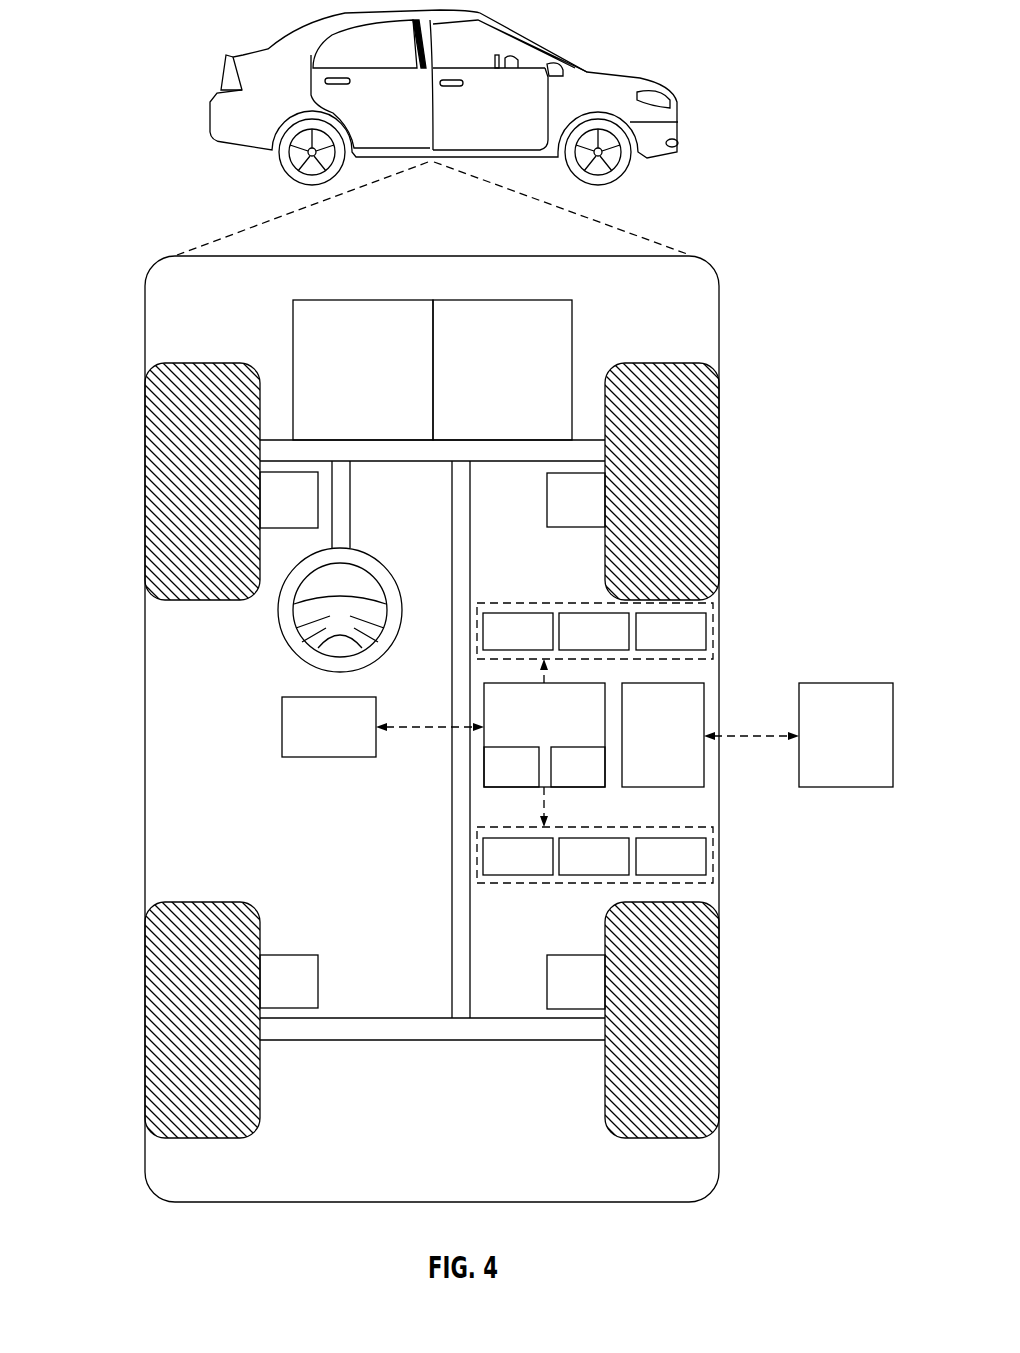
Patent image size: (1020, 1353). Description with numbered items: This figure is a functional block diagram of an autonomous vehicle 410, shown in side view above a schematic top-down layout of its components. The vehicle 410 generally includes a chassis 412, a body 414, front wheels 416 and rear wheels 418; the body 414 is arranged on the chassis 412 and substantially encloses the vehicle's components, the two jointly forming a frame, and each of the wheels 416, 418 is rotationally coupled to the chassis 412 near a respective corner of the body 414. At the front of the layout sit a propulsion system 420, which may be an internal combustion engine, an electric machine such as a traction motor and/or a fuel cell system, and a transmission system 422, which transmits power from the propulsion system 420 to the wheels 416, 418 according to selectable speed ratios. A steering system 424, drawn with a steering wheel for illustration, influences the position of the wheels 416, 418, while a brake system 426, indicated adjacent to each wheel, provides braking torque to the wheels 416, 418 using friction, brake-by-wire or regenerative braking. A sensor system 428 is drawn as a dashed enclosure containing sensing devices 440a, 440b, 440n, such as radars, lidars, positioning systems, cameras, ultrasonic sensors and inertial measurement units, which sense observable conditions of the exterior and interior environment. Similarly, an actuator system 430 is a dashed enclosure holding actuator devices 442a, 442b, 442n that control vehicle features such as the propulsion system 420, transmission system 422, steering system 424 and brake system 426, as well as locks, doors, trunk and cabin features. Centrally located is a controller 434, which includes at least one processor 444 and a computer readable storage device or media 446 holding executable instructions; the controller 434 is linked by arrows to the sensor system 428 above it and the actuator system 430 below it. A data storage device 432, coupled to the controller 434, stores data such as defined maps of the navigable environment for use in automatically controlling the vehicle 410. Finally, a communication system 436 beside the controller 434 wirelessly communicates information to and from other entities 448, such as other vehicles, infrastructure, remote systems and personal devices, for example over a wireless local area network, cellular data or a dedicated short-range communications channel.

The vehicle 410 is at (222, 92).
The chassis 412 is at (452, 895).
The body 414 is at (146, 692).
The front wheels 416 is at (202, 363).
The rear wheels 418 is at (202, 1138).
The propulsion system 420 is at (382, 383).
The transmission system 422 is at (521, 383).
The steering system 424 is at (360, 526).
The brake system 426 is at (308, 515).
The sensor system 428 is at (595, 614).
The actuator system 430 is at (595, 875).
The data storage device 432 is at (348, 739).
The controller 434 is at (563, 727).
The communication system 436 is at (682, 751).
The sensing device 440a is at (544, 646).
The sensing device 440b is at (620, 646).
The sensing device 440n is at (697, 646).
The actuator device 442a is at (544, 871).
The actuator device 442b is at (620, 871).
The actuator device 442n is at (697, 871).
The processor 444 is at (530, 779).
The computer readable storage device or media 446 is at (597, 779).
The other entities 448 is at (865, 746).